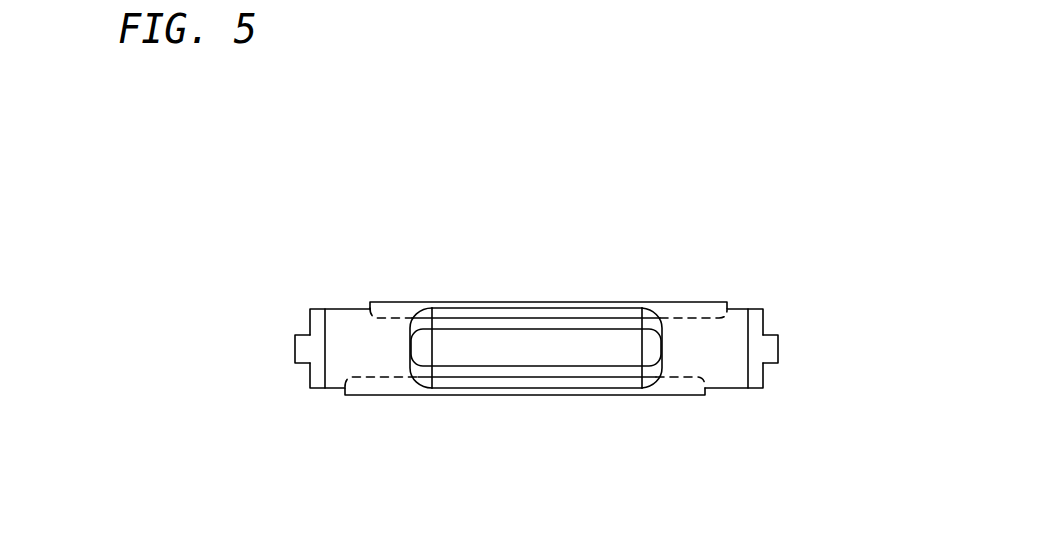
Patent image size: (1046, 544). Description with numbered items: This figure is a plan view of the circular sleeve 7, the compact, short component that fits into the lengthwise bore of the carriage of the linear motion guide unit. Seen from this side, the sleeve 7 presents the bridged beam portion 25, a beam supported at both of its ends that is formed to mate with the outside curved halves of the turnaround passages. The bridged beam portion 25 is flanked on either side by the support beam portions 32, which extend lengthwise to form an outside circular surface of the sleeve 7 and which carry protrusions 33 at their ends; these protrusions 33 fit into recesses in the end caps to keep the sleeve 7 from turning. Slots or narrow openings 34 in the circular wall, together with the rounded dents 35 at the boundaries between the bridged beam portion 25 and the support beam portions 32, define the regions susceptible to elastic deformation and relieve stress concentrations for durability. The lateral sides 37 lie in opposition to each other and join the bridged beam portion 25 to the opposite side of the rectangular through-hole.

The circular sleeve 7 is at (636, 278).
The bridged beam portion 25 is at (563, 340).
The support beam portions 32 is at (350, 333).
The protrusions 33 is at (303, 352).
The slots or narrow openings 34 is at (504, 322).
The rounded dents 35 is at (421, 340).
The lateral sides 37 is at (657, 302).